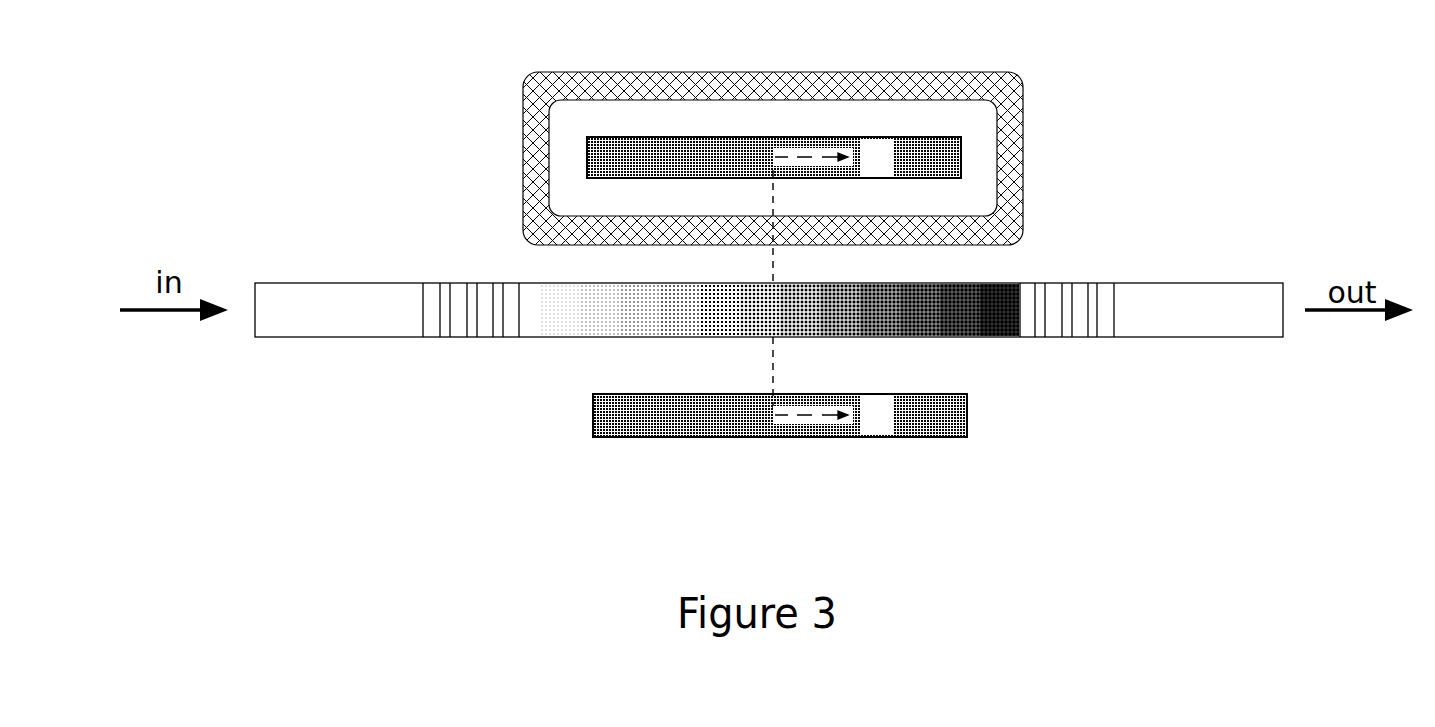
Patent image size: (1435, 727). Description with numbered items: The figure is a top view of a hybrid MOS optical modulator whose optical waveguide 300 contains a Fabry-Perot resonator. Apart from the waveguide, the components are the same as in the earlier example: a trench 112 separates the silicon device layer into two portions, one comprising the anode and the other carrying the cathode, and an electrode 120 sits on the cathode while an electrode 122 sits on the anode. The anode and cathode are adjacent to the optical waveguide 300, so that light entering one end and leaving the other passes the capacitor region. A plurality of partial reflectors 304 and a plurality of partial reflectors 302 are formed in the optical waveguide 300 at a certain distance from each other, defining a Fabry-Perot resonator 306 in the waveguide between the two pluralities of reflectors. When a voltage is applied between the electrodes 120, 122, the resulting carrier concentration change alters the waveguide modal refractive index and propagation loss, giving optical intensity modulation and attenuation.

The trench 112 is at (952, 72).
The electrode 120 is at (862, 137).
The electrode 122 is at (915, 437).
The optical waveguide 300 is at (1177, 337).
The partial reflectors 302 is at (1020, 272).
The partial reflectors 304 is at (423, 272).
The Fabry-Perot resonator 306 is at (930, 340).